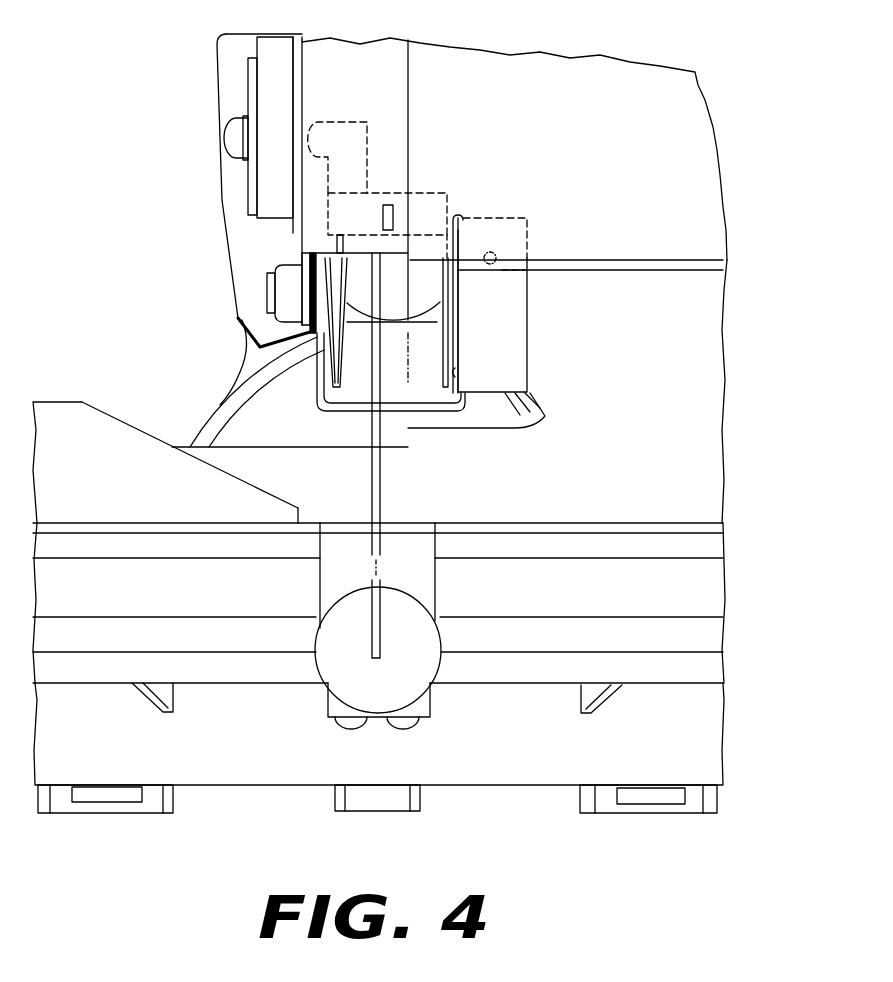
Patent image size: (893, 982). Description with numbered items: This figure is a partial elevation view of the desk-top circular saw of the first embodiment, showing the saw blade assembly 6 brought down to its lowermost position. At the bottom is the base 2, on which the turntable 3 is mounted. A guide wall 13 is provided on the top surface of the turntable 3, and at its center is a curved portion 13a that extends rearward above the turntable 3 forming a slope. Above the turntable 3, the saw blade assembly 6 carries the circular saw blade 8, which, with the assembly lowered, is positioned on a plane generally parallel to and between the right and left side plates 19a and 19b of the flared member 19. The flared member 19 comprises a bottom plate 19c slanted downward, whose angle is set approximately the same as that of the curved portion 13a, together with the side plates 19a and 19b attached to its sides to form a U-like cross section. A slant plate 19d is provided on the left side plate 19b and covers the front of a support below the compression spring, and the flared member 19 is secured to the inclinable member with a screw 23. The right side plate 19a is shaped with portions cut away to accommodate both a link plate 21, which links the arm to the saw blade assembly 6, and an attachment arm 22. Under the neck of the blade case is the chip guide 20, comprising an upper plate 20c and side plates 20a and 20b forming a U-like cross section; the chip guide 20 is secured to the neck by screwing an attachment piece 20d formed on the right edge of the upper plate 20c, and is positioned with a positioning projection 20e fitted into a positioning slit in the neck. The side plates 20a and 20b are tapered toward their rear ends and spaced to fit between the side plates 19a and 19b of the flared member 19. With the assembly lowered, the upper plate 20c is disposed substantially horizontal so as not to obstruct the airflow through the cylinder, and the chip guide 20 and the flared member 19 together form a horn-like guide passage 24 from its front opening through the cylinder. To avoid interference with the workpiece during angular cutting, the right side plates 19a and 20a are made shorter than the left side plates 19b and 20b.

The base 2 is at (688, 740).
The turntable 3 is at (698, 545).
The saw blade assembly 6 is at (668, 127).
The circular saw blade 8 is at (372, 469).
The guide wall 13 is at (695, 440).
The curved portion 13a is at (268, 476).
The flared member 19 is at (473, 422).
The right side plate 19a is at (243, 381).
The left side plate 19b is at (455, 375).
The bottom plate 19c is at (393, 387).
The slant plate 19d is at (503, 335).
The chip guide 20 is at (425, 190).
The right side plate 20a is at (302, 253).
The left side plate 20b is at (447, 302).
The upper plate 20c is at (455, 195).
The attachment piece 20d is at (337, 118).
The positioning projection 20e is at (385, 212).
The link plate 21 is at (317, 312).
The attachment arm 22 is at (307, 288).
The screw 23 is at (503, 264).
The guide passage 24 is at (395, 281).